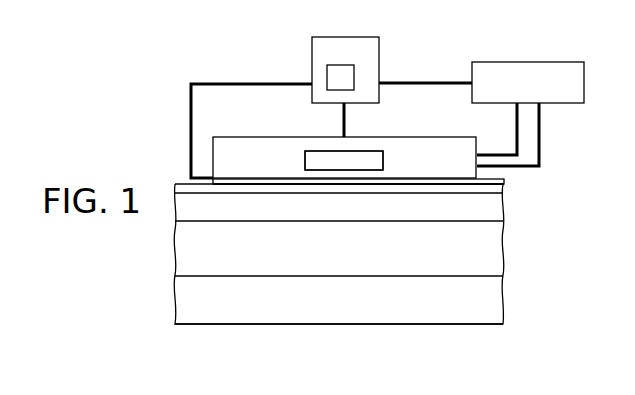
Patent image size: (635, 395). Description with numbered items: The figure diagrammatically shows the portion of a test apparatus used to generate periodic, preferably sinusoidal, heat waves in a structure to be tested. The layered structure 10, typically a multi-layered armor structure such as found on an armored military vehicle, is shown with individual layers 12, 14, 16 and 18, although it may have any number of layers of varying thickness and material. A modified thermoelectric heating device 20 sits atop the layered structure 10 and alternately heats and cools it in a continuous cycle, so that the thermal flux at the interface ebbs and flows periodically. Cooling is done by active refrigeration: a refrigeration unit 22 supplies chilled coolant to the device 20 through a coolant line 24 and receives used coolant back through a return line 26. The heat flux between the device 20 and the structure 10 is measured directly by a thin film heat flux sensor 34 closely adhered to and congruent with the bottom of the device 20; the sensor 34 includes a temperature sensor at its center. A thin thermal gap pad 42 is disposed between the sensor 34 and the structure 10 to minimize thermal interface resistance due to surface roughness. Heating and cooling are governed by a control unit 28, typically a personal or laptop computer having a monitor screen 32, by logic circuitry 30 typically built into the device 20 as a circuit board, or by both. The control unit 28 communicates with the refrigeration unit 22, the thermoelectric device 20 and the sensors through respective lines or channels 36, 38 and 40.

The layered structure 10 is at (224, 335).
The layer 12 is at (503, 189).
The layer 14 is at (503, 213).
The layer 16 is at (503, 238).
The layer 18 is at (503, 292).
The thermoelectric heating device 20 is at (237, 137).
The refrigeration unit 22 is at (548, 62).
The coolant line 24 is at (540, 148).
The return line 26 is at (518, 137).
The control unit 28 is at (368, 37).
The logic circuitry 30 is at (310, 150).
The monitor screen 32 is at (339, 65).
The thin film heat flux sensor 34 is at (232, 179).
The line or channel 36 is at (418, 82).
The line or channel 38 is at (315, 150).
The line or channel 40 is at (238, 83).
The thermal gap pad 42 is at (233, 185).